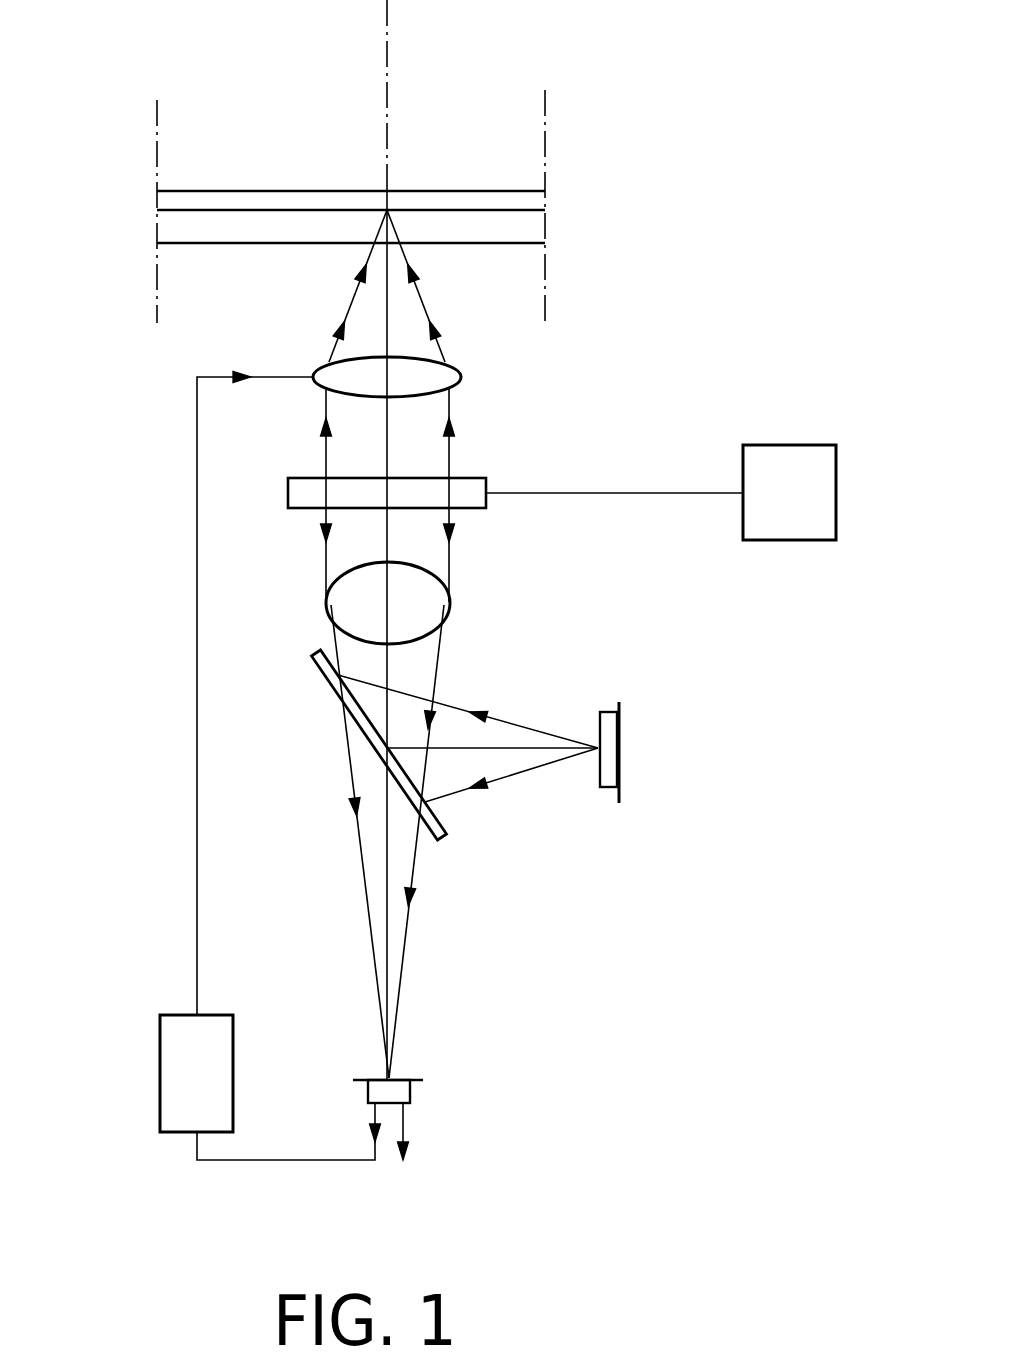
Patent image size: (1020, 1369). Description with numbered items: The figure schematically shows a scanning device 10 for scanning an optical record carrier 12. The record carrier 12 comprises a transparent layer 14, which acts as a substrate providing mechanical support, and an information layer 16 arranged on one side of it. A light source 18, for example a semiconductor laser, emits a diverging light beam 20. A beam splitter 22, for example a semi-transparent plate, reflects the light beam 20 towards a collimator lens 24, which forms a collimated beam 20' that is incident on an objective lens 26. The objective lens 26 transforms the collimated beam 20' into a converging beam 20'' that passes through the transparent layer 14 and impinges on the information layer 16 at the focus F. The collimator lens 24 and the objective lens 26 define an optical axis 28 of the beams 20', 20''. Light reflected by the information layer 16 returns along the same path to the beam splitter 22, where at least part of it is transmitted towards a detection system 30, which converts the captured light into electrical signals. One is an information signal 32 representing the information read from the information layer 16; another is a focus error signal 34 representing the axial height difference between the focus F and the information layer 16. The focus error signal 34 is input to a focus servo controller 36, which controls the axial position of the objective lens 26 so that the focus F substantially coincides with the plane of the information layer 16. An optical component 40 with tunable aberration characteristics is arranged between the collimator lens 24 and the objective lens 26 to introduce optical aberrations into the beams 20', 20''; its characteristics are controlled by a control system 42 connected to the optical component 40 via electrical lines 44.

The scanning device 10 is at (96, 383).
The optical record carrier 12 is at (351, 194).
The transparent layer 14 is at (198, 228).
The information layer 16 is at (345, 200).
The light source 18 is at (622, 750).
The light beam 20 is at (468, 765).
The collimated beam 20' is at (429, 495).
The converging beam 20'' is at (422, 286).
The beam splitter 22 is at (356, 723).
The collimator lens 24 is at (340, 608).
The objective lens 26 is at (440, 372).
The optical axis 28 is at (388, 1).
The detection system 30 is at (405, 1092).
The information signal 32 is at (407, 1122).
The focus error signal 34 is at (308, 1158).
The focus servo controller 36 is at (170, 1087).
The optical component 40 is at (468, 487).
The control system 42 is at (790, 460).
The electrical lines 44 is at (615, 495).
The focus F is at (387, 210).